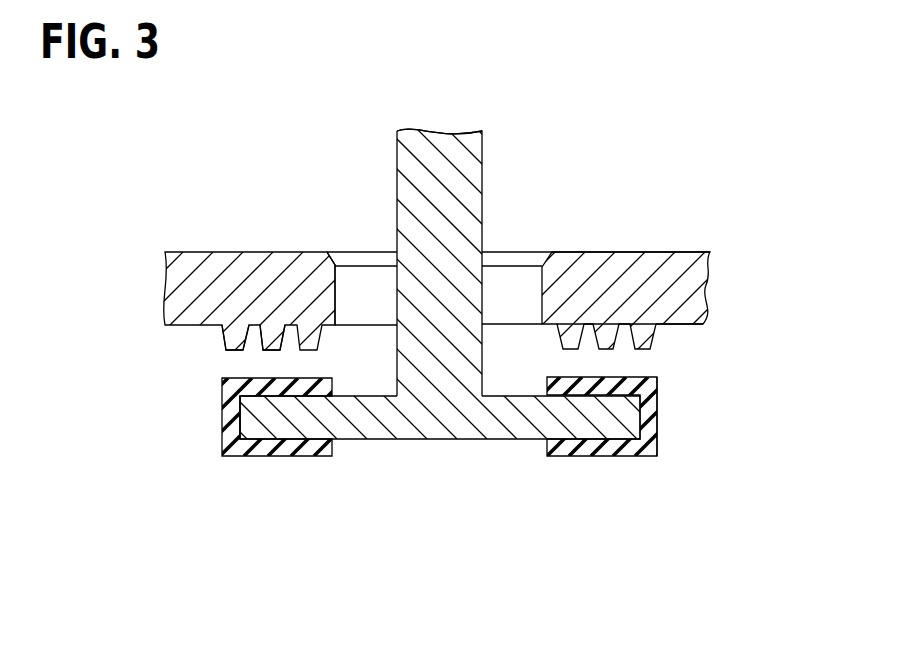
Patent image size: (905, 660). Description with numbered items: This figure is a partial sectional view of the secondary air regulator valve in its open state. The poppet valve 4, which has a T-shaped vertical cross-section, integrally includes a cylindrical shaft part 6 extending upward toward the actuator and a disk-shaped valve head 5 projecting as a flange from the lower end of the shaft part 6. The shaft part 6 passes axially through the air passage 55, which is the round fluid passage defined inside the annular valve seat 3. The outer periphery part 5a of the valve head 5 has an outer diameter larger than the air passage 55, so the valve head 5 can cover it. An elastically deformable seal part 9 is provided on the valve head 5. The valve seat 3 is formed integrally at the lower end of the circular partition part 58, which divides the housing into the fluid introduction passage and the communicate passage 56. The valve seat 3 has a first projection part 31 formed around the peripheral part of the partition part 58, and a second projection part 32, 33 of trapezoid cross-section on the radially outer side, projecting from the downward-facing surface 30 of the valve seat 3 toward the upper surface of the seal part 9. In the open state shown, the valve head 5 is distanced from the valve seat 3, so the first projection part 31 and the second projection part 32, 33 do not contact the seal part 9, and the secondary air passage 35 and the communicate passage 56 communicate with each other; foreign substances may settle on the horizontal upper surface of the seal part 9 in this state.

The valve seat 3 is at (672, 343).
The poppet valve 4 is at (617, 467).
The valve head 5 is at (437, 423).
The outer periphery part 5a is at (250, 416).
The shaft part 6 is at (408, 173).
The seal part 9 is at (272, 458).
The surface of the valve seat 30 is at (691, 337).
The first projection part 31 is at (304, 348).
The second projection part 32 is at (270, 349).
The second projection part 33 is at (232, 351).
The secondary air passage 35 is at (506, 176).
The air passage 55 is at (512, 276).
The communicate passage 56 is at (692, 433).
The partition part 58 is at (676, 270).